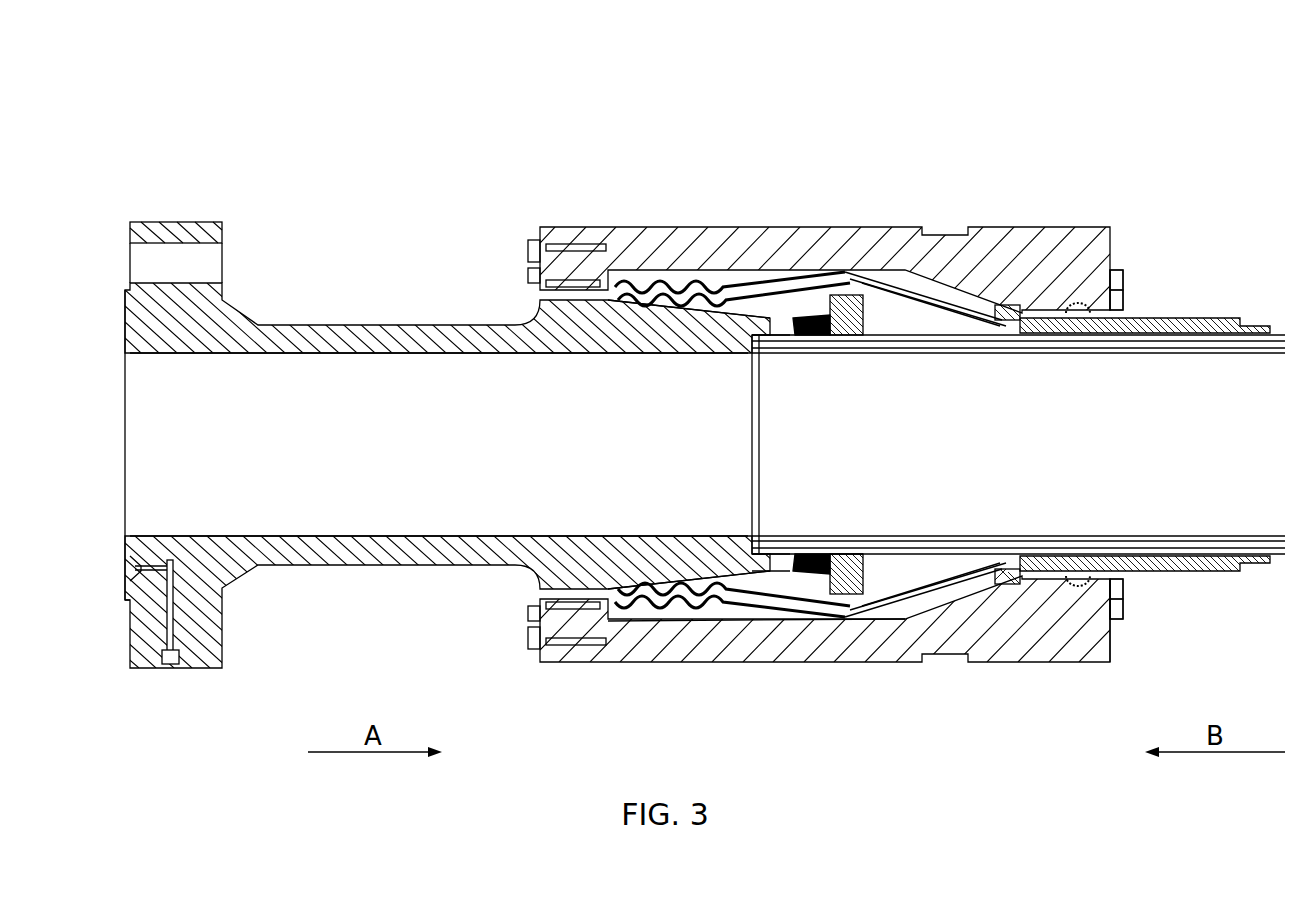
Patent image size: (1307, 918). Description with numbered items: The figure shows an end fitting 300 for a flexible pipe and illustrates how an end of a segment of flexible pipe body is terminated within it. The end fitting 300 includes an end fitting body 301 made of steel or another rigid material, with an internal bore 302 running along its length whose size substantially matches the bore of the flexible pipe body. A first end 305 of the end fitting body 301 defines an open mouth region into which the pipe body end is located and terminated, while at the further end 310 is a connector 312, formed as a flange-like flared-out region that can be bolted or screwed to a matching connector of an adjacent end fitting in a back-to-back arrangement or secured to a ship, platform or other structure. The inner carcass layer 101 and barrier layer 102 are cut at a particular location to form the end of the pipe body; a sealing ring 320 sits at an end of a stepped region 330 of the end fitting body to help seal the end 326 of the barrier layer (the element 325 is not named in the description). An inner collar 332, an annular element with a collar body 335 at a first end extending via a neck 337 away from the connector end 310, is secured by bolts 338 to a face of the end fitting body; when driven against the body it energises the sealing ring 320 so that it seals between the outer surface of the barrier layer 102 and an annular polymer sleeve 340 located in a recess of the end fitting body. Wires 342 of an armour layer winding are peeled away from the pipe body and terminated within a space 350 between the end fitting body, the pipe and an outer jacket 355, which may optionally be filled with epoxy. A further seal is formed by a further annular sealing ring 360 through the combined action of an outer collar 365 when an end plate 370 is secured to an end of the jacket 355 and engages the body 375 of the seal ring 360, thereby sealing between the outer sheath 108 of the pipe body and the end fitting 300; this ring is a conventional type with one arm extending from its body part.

The end fitting 300 is at (492, 114).
The end fitting body 301 is at (280, 674).
The internal bore 302 is at (356, 409).
The first end 305 is at (686, 411).
The further end 310 is at (83, 517).
The connector 312 is at (222, 227).
The sealing ring 320 is at (817, 335).
The upper shoulder 325 is at (748, 350).
The end of the barrier layer 326 is at (748, 540).
The stepped region 330 is at (768, 318).
The inner collar 332 is at (866, 556).
The collar body 335 is at (845, 625).
The neck 337 is at (948, 330).
The bolts 338 is at (842, 292).
The annular polymer sleeve 340 is at (736, 640).
The wires 342 is at (648, 283).
The space 350 is at (900, 270).
The outer jacket 355 is at (777, 650).
The further annular sealing ring 360 is at (1057, 306).
The outer collar 365 is at (1006, 304).
The end plate 370 is at (1105, 652).
The body of the seal ring 375 is at (1113, 288).
The inner carcass layer 101 is at (912, 345).
The barrier layer 102 is at (798, 556).
The outer sheath 108 is at (1130, 323).